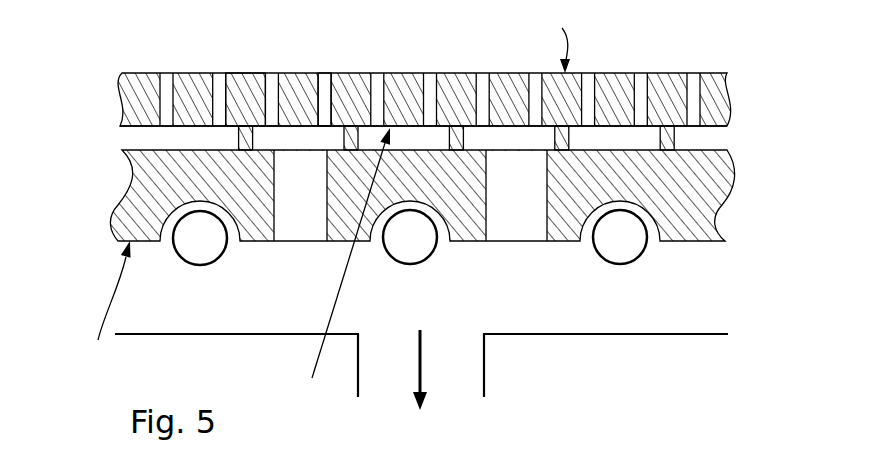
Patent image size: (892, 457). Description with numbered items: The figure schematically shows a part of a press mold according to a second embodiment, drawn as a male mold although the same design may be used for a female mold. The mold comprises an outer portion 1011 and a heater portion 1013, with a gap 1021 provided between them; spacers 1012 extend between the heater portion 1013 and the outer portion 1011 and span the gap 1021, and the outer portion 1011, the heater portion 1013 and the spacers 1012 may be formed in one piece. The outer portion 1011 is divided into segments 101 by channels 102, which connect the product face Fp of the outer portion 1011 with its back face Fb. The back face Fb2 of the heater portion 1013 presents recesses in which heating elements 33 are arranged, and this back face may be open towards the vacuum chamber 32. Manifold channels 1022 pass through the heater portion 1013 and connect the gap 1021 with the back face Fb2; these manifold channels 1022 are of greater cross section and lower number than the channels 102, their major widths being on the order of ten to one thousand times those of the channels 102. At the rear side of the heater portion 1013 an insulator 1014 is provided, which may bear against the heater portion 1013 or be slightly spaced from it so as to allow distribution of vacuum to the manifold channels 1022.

The first portion of top element 101 is at (246, 72).
The channels 102 is at (321, 72).
The outer portion 1011 is at (664, 72).
The spacers 1012 is at (674, 130).
The heater portion 1013 is at (446, 262).
The insulator 1014 is at (640, 335).
The gap 1021 is at (205, 134).
The manifold channels 1022 is at (301, 218).
The vacuum chamber 32 is at (438, 356).
The heating elements 33 is at (410, 237).
The product face Fp is at (554, 39).
The back face Fb is at (342, 265).
The back face of the heater portion Fb2 is at (101, 309).